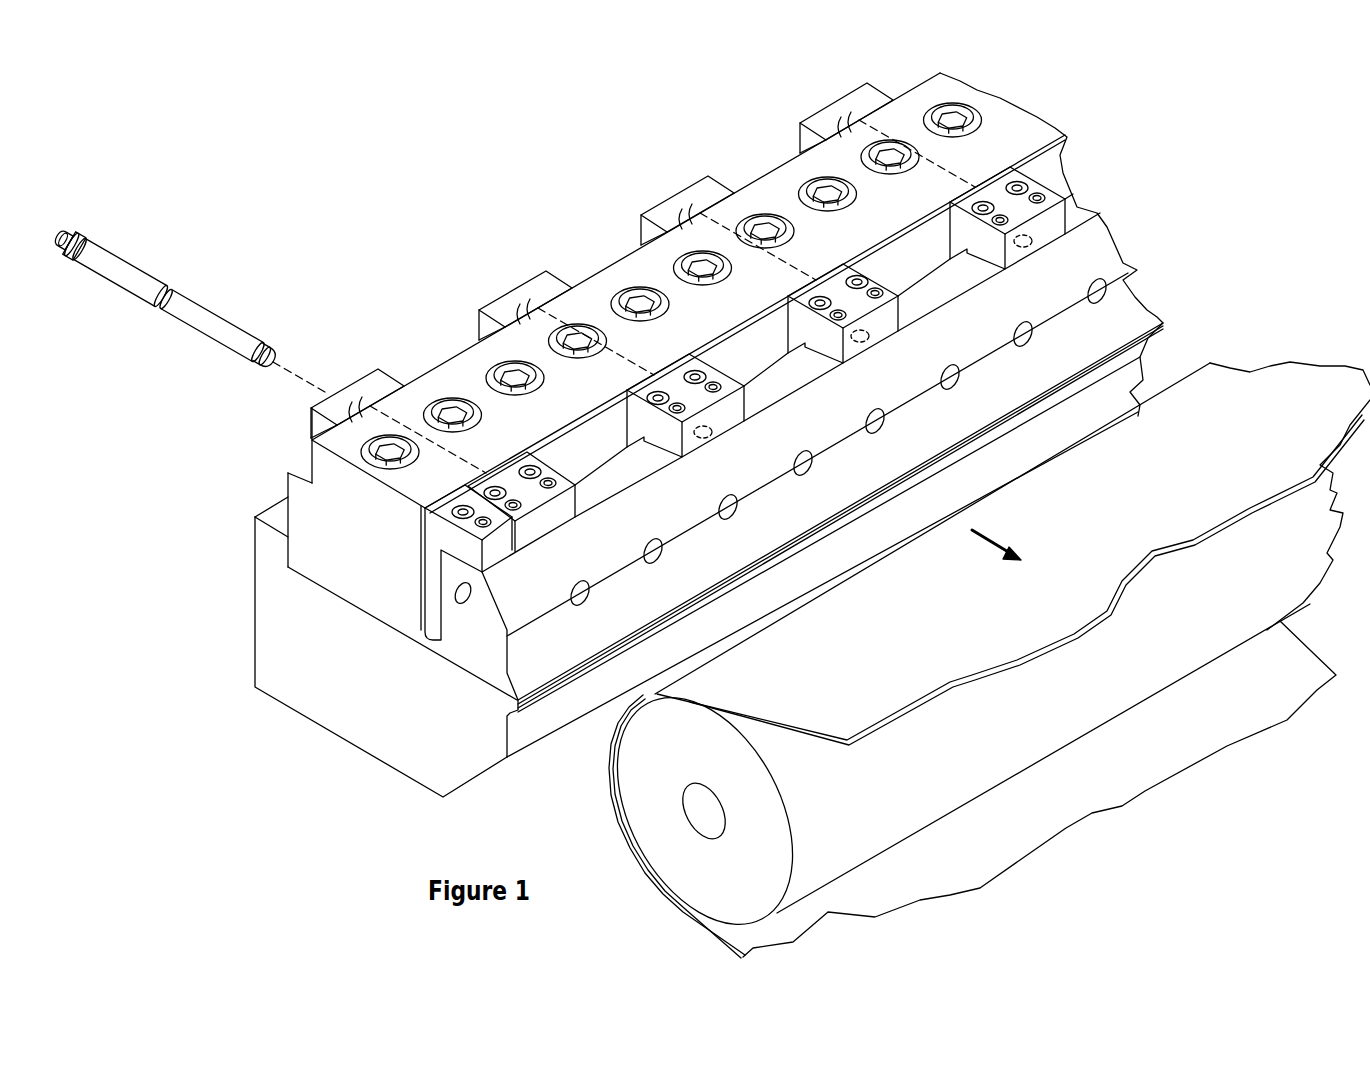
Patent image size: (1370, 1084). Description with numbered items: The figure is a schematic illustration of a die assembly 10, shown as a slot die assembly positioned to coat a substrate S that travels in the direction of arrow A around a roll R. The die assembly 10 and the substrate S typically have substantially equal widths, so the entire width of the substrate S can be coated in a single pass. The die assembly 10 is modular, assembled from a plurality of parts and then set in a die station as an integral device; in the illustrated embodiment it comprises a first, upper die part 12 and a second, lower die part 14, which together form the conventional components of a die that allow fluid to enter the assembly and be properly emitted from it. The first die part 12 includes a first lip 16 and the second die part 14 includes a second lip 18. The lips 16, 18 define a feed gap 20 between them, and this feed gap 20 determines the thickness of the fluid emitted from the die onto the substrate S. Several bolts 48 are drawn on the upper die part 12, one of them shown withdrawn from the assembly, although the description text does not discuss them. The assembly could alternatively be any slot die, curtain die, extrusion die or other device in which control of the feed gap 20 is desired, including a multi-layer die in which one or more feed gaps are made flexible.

The die assembly 10 is at (1100, 138).
The first die part 12 is at (335, 528).
The second die part 14 is at (290, 644).
The first lip 16 is at (1163, 322).
The second lip 18 is at (1157, 343).
The feed gap 20 is at (1166, 320).
The bolts 48 is at (186, 282).
The direction of travel arrow A is at (1008, 558).
The roll R is at (690, 867).
The substrate S is at (1253, 382).